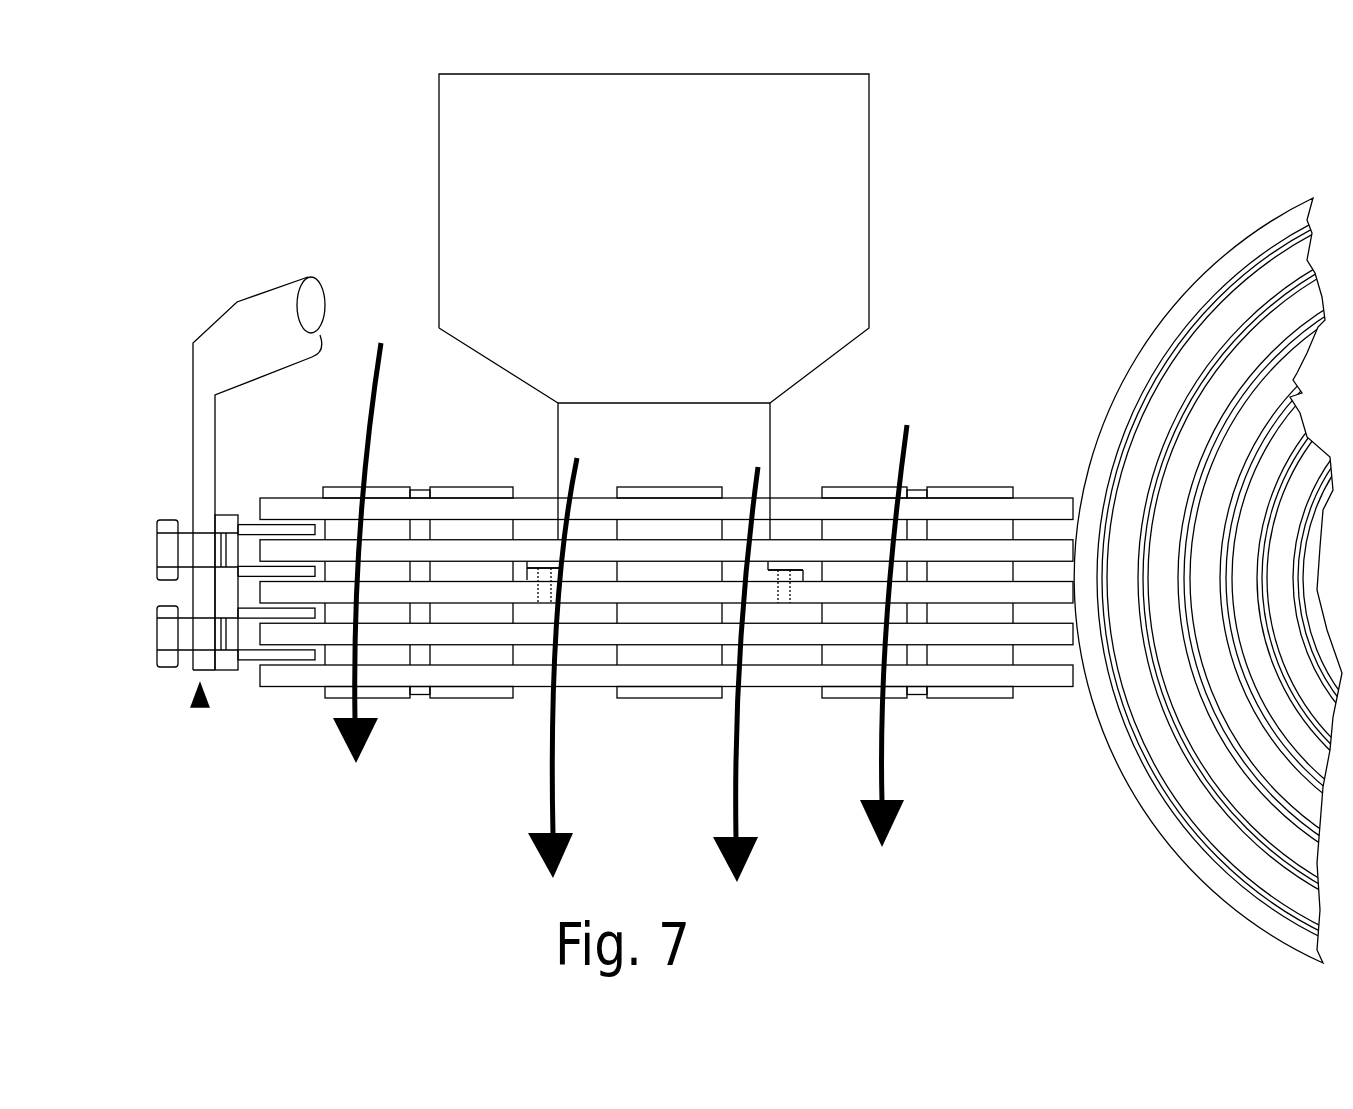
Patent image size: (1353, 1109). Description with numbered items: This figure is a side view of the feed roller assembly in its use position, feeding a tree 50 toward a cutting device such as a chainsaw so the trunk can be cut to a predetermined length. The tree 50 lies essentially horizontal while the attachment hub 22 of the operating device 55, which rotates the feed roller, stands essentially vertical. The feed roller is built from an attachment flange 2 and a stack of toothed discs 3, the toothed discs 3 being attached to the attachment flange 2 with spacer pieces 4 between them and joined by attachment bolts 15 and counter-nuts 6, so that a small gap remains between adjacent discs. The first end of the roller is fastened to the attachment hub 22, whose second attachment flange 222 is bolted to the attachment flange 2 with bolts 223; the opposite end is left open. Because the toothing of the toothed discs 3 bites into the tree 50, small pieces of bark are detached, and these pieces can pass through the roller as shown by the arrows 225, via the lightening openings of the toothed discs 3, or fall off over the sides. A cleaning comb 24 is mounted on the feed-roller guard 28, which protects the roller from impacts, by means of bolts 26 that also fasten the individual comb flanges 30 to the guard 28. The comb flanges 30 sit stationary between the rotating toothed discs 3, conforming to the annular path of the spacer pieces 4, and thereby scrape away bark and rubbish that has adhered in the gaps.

The attachment flange 2 is at (1060, 597).
The toothed disc 3 is at (1062, 547).
The spacer piece 4 is at (837, 655).
The counter-nut 6 is at (457, 494).
The attachment bolt 15 is at (417, 700).
The attachment hub 22 is at (724, 453).
The cleaning comb 24 is at (198, 707).
The bolt 26 is at (165, 633).
The feed-roller guard 28 is at (202, 438).
The comb flange 30 is at (290, 523).
The tree 50 is at (1177, 390).
The operating device 55 is at (672, 194).
The second attachment flange 222 is at (802, 582).
The bolt 223 is at (793, 595).
The arrow 225 is at (878, 763).